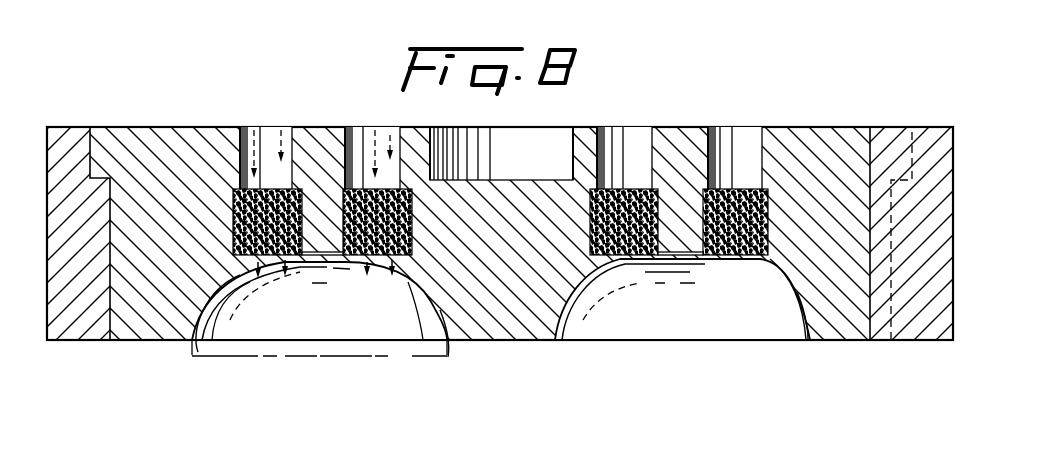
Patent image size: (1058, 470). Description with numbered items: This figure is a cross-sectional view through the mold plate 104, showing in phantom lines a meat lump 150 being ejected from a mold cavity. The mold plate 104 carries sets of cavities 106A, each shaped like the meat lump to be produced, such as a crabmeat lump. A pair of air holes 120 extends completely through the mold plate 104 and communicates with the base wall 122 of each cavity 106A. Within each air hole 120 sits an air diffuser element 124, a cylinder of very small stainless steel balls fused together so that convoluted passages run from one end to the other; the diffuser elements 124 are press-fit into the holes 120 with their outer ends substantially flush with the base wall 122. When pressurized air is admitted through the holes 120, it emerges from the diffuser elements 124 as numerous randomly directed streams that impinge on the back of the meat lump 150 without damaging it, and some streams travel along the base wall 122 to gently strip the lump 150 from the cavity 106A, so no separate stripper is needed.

The mold plate 104 is at (830, 128).
The air holes 120 is at (261, 186).
The air diffuser element 124 is at (233, 189).
The mold cavities 106A is at (432, 307).
The base wall 122 is at (198, 350).
The meat lump 150 is at (343, 358).